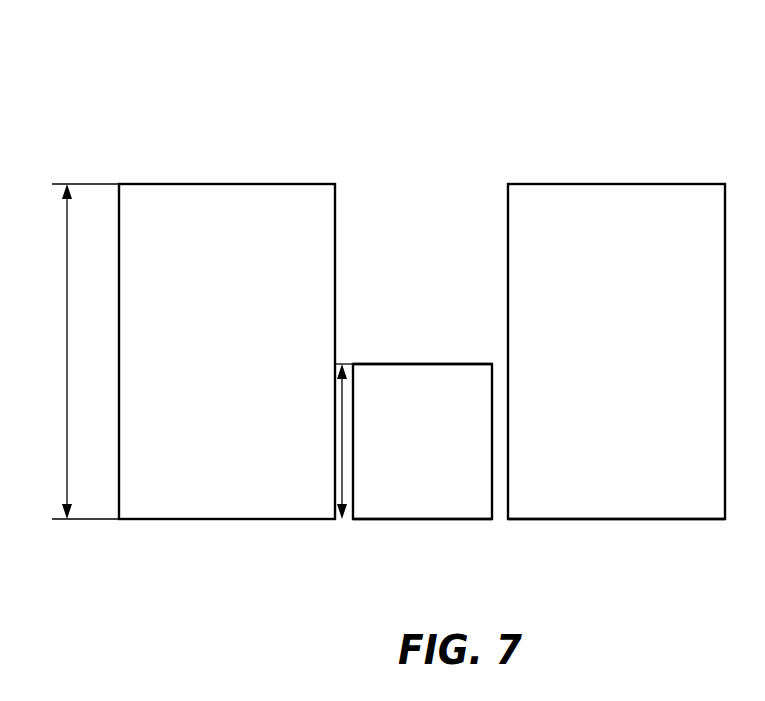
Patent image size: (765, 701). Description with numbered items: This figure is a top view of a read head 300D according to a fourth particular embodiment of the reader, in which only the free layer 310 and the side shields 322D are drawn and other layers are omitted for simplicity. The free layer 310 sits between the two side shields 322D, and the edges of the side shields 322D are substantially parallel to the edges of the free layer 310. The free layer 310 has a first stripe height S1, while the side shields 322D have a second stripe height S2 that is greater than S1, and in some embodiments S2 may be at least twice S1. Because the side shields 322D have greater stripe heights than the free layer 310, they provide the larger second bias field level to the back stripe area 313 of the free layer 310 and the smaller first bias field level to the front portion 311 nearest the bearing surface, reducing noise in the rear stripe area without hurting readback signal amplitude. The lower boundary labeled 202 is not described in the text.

The read head 300D is at (545, 66).
The side shields 322D is at (211, 210).
The free layer 310 is at (381, 362).
The back stripe area 313 is at (419, 390).
The front portion 311 is at (436, 500).
The substrate 202 is at (683, 521).
The first stripe height S1 is at (342, 453).
The second stripe height S2 is at (67, 453).